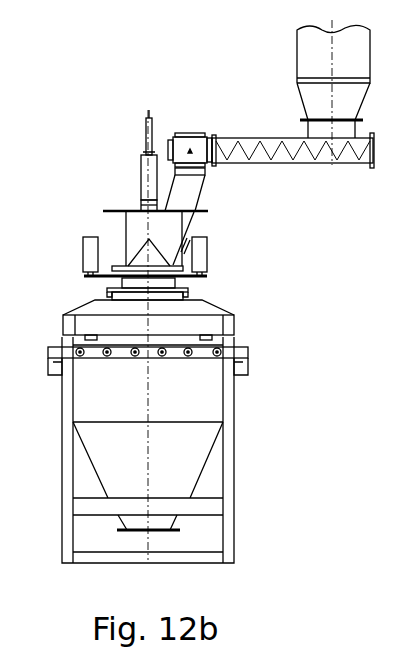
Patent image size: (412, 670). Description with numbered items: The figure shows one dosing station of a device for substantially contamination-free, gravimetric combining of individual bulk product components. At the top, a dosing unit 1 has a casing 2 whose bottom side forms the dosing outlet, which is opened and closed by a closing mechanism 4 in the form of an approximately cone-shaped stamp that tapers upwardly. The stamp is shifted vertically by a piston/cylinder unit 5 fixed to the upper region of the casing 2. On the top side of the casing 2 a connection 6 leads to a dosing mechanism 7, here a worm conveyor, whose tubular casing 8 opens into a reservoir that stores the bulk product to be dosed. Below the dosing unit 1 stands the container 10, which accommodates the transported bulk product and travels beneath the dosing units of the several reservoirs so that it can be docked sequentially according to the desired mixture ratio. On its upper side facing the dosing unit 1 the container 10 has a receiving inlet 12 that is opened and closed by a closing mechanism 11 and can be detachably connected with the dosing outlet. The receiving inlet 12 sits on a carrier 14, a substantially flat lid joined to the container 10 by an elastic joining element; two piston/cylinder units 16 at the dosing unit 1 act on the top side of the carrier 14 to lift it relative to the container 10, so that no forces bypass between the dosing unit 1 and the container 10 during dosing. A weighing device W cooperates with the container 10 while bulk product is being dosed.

The dosing unit 1 is at (113, 189).
The casing 2 is at (127, 222).
The closing mechanism 4 is at (163, 253).
The piston/cylinder unit 5 is at (142, 177).
The connection 6 is at (190, 192).
The dosing mechanism 7 is at (229, 140).
The tubular casing 8 is at (273, 138).
The container 10 is at (236, 403).
The closing mechanism 11 is at (165, 298).
The receiving inlet 12 is at (187, 280).
The carrier 14 is at (97, 278).
The piston/cylinder units 16 is at (85, 258).
The weighing device W is at (253, 362).